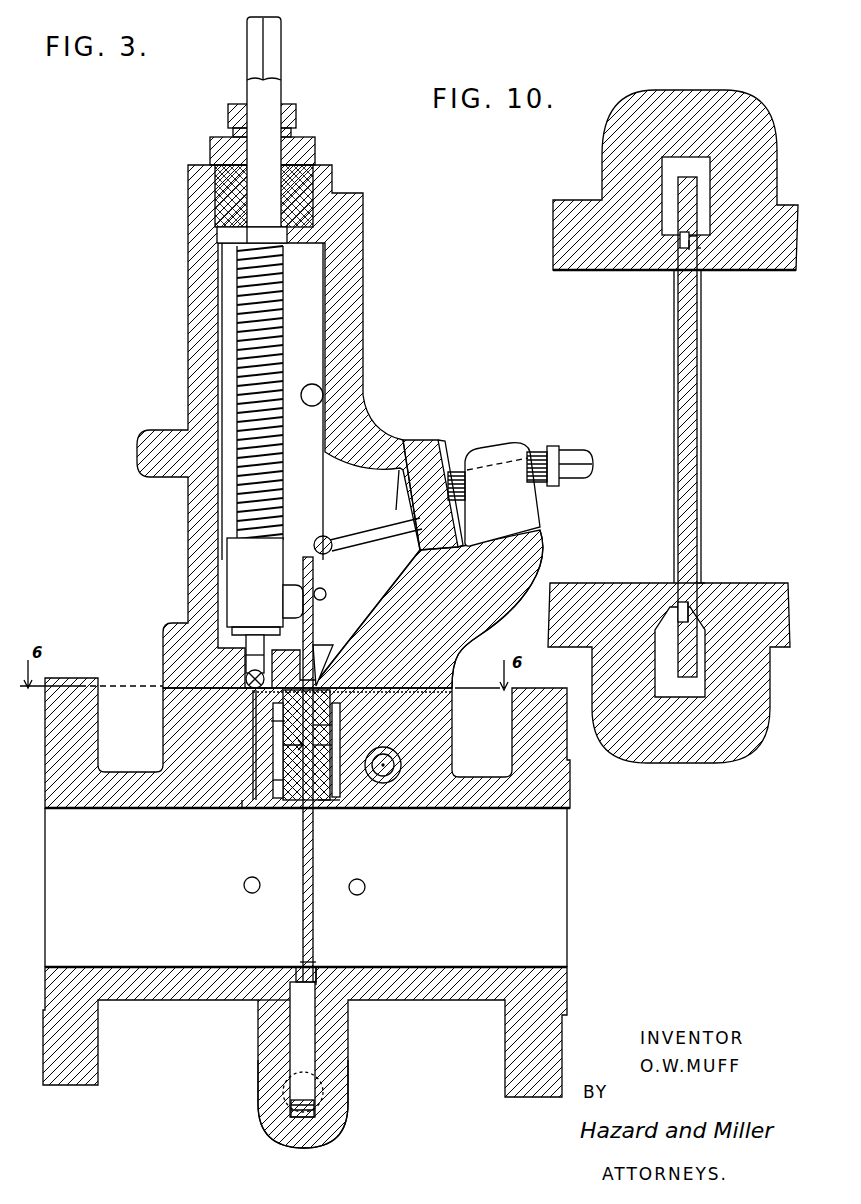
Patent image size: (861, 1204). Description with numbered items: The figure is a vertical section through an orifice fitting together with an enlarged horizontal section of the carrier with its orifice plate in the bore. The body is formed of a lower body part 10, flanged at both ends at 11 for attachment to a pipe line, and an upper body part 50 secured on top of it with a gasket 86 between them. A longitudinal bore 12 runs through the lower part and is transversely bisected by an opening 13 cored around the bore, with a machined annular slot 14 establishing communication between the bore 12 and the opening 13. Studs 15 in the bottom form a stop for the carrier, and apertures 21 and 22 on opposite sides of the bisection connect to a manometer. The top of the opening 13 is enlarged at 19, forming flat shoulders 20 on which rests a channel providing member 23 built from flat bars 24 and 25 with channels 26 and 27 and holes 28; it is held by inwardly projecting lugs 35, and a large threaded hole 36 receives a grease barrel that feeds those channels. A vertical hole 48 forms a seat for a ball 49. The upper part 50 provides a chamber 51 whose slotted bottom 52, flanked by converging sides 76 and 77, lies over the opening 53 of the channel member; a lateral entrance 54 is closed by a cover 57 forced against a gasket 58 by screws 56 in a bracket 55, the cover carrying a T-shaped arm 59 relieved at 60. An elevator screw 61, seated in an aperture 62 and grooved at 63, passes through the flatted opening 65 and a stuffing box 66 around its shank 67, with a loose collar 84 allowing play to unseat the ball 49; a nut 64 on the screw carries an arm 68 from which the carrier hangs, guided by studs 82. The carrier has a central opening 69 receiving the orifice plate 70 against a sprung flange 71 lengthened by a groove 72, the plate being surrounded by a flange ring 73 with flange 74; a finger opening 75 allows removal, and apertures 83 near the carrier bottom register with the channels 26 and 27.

In FIG. 3, the lower body part 10 is at (416, 985).
In FIG. 10, the lower body part 10 is at (668, 732).
In FIG. 3, the flanges 11 is at (55, 1060).
In FIG. 3, the bore 12 is at (540, 890).
In FIG. 10, the bore 12 is at (586, 272).
In FIG. 3, the opening 13 is at (288, 1040).
In FIG. 10, the opening 13 is at (696, 695).
In FIG. 3, the annular slot 14 is at (258, 998).
In FIG. 10, the annular slot 14 is at (696, 592).
In FIG. 3, the studs 15 is at (288, 1112).
In FIG. 3, the enlarged top of opening 19 is at (350, 716).
In FIG. 3, the shoulders 20 is at (330, 800).
In FIG. 3, the aperture 21 is at (247, 878).
In FIG. 3, the aperture 22 is at (364, 881).
In FIG. 3, the channel providing member 23 is at (365, 712).
In FIG. 3, the flat bar 24 is at (300, 755).
In FIG. 3, the flat bar 25 is at (335, 726).
In FIG. 3, the channel 26 is at (290, 782).
In FIG. 3, the channel 27 is at (320, 746).
In FIG. 3, the holes 28 is at (290, 760).
In FIG. 3, the lugs or bosses 35 is at (330, 690).
In FIG. 3, the hole 36 is at (402, 766).
In FIG. 3, the vertical hole 48 is at (244, 808).
In FIG. 3, the ball 49 is at (253, 676).
In FIG. 3, the upper body part 50 is at (364, 250).
In FIG. 3, the chamber 51 is at (312, 302).
In FIG. 3, the slot 52 is at (455, 650).
In FIG. 3, the opening 53 is at (453, 668).
In FIG. 3, the lateral entrance 54 is at (404, 500).
In FIG. 3, the arm or bracket 55 is at (520, 503).
In FIG. 3, the screws 56 is at (530, 450).
In FIG. 3, the cover 57 is at (440, 446).
In FIG. 3, the gasket 58 is at (403, 443).
In FIG. 3, the T-shaped arm 59 is at (353, 532).
In FIG. 3, the relieved center 60 is at (318, 537).
In FIG. 3, the elevator screw 61 is at (240, 315).
In FIG. 3, the aperture 62 is at (250, 664).
In FIG. 3, the vertical groove 63 is at (250, 650).
In FIG. 3, the nut or collar 64 is at (283, 572).
In FIG. 3, the flatted opening 65 is at (218, 193).
In FIG. 3, the stuffing box 66 is at (229, 130).
In FIG. 3, the shank 67 is at (262, 93).
In FIG. 3, the arm 68 is at (304, 600).
In FIG. 3, the central opening 69 is at (314, 977).
In FIG. 10, the central opening 69 is at (680, 240).
In FIG. 3, the orifice plate 70 is at (313, 853).
In FIG. 10, the orifice plate 70 is at (684, 302).
In FIG. 10, the flange 71 is at (680, 250).
In FIG. 3, the groove 72 is at (298, 982).
In FIG. 10, the groove 72 is at (683, 255).
In FIG. 3, the flange ring 73 is at (310, 966).
In FIG. 10, the flange ring 73 is at (690, 240).
In FIG. 3, the flange 74 is at (313, 810).
In FIG. 10, the flange 74 is at (695, 252).
In FIG. 3, the finger opening 75 is at (281, 808).
In FIG. 3, the converging side 76 is at (320, 642).
In FIG. 3, the converging side 77 is at (392, 612).
In FIG. 3, the studs 82 is at (313, 395).
In FIG. 3, the apertures 83 is at (292, 1062).
In FIG. 3, the loose collar 84 is at (231, 236).
In FIG. 3, the gasket 86 is at (250, 688).